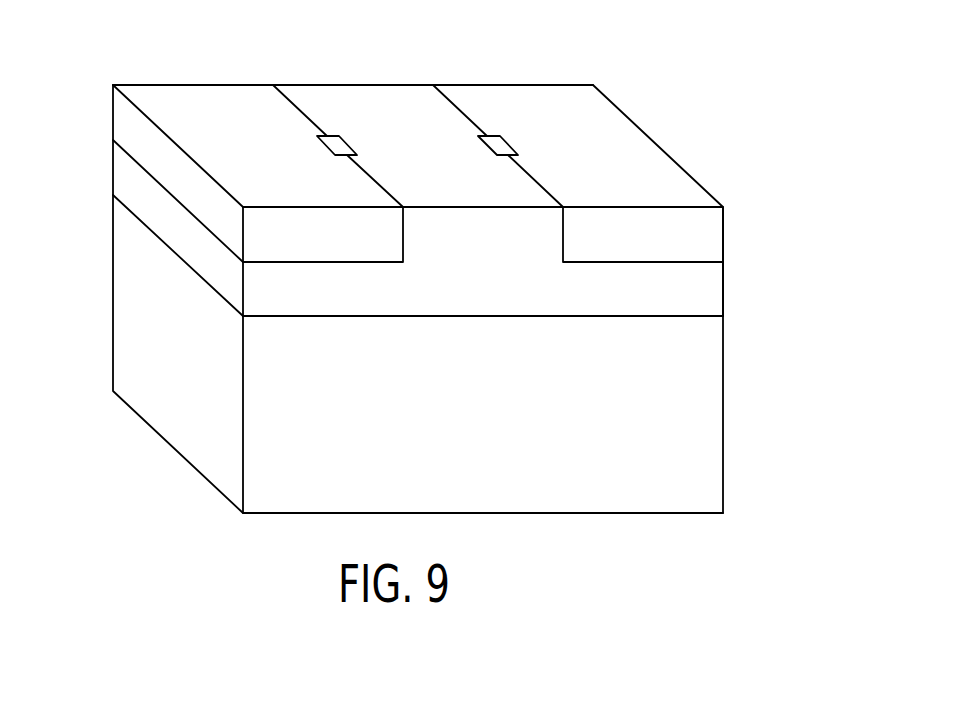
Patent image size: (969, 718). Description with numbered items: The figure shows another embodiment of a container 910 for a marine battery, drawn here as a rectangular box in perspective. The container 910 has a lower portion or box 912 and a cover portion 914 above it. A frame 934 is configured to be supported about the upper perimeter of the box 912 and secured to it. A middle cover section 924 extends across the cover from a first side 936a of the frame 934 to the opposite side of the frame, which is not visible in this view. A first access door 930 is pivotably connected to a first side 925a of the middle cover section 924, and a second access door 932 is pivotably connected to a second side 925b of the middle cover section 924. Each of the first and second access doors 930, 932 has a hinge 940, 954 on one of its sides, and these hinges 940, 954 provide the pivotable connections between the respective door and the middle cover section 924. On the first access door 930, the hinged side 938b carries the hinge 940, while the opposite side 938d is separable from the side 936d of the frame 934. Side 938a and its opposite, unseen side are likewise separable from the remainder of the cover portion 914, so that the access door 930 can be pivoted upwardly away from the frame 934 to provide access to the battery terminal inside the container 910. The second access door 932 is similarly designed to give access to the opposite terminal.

The container 910 is at (663, 68).
The lower portion (box) 912 is at (702, 422).
The cover portion 914 is at (373, 93).
The middle cover section 924 is at (408, 117).
The first side of the middle cover section 925a is at (278, 102).
The second side of the middle cover section 925b is at (565, 192).
The first access door 930 is at (185, 93).
The second access door 932 is at (630, 148).
The frame 934 is at (702, 285).
The first side of the frame 936a is at (483, 295).
The side of the frame 936d is at (158, 218).
The side of access door 938a is at (325, 238).
The hinged side of access door 938b is at (383, 173).
The side of access door 938d is at (145, 142).
The hinge 940 is at (335, 135).
The hinge 954 is at (505, 147).